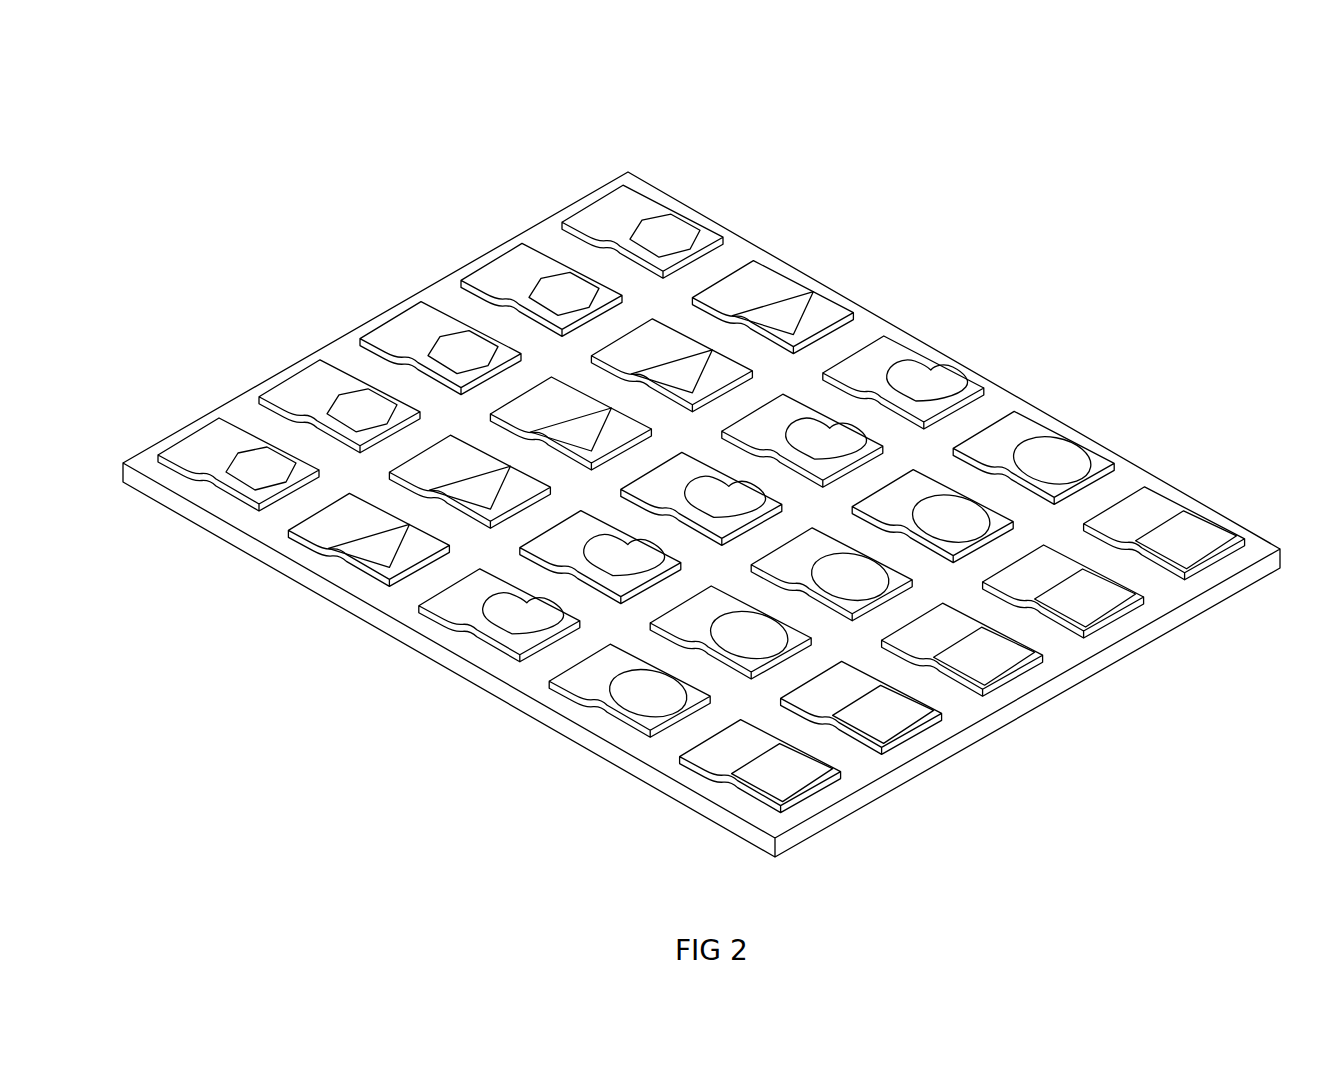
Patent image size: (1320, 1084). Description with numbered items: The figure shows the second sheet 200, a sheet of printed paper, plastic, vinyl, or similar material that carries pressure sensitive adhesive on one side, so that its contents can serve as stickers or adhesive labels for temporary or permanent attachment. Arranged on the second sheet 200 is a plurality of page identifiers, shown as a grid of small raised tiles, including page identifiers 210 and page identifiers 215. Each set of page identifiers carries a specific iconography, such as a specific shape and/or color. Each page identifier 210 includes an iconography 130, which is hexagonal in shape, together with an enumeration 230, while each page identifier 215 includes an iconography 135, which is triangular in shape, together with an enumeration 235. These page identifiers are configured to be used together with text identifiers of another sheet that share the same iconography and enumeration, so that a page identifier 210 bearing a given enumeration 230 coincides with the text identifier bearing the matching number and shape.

The second sheet 200 is at (368, 143).
The page identifier 210 is at (621, 216).
The iconography 130 is at (703, 220).
The enumeration 230 is at (658, 232).
The page identifier 215 is at (753, 288).
The enumeration 235 is at (856, 311).
The iconography 135 is at (823, 297).